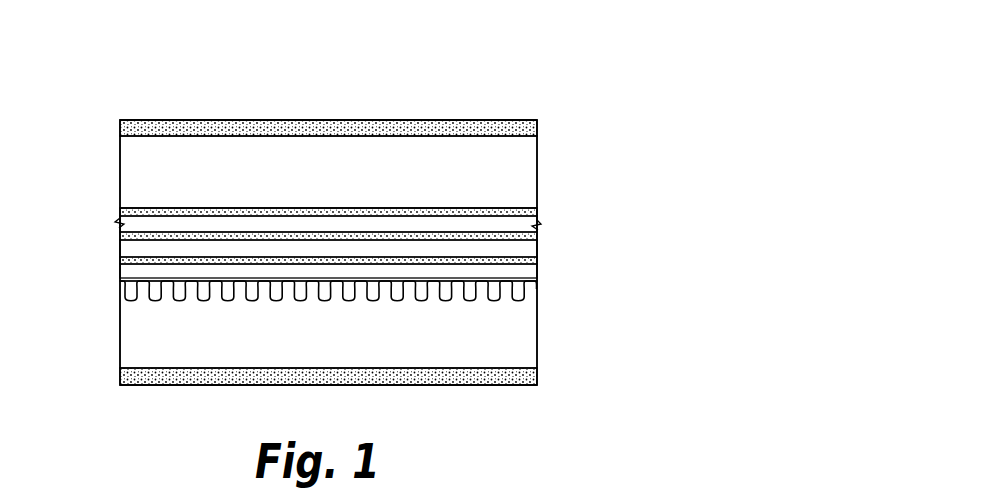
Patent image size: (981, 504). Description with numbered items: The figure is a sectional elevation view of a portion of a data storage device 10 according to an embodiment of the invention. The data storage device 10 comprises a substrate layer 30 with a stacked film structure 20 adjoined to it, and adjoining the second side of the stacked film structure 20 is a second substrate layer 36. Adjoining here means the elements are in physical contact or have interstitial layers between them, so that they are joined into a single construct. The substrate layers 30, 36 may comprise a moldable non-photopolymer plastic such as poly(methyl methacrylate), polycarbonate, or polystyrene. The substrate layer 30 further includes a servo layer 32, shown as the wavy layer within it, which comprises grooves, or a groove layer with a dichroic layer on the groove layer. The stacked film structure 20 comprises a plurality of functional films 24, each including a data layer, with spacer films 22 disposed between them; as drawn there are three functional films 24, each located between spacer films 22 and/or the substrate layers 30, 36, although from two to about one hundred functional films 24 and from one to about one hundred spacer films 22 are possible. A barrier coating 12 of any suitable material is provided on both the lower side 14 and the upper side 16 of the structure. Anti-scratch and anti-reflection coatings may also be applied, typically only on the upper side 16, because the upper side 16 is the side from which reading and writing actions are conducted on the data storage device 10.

The data storage device 10 is at (542, 74).
The barrier coating 12 is at (537, 128).
The lower side 14 is at (96, 389).
The upper side 16 is at (114, 112).
The stacked film structure 20 is at (112, 208).
The spacer film 22 is at (539, 230).
The functional film 24 is at (537, 212).
The substrate layer 30 is at (112, 324).
The servo layer 32 is at (546, 293).
The second substrate layer 36 is at (112, 168).